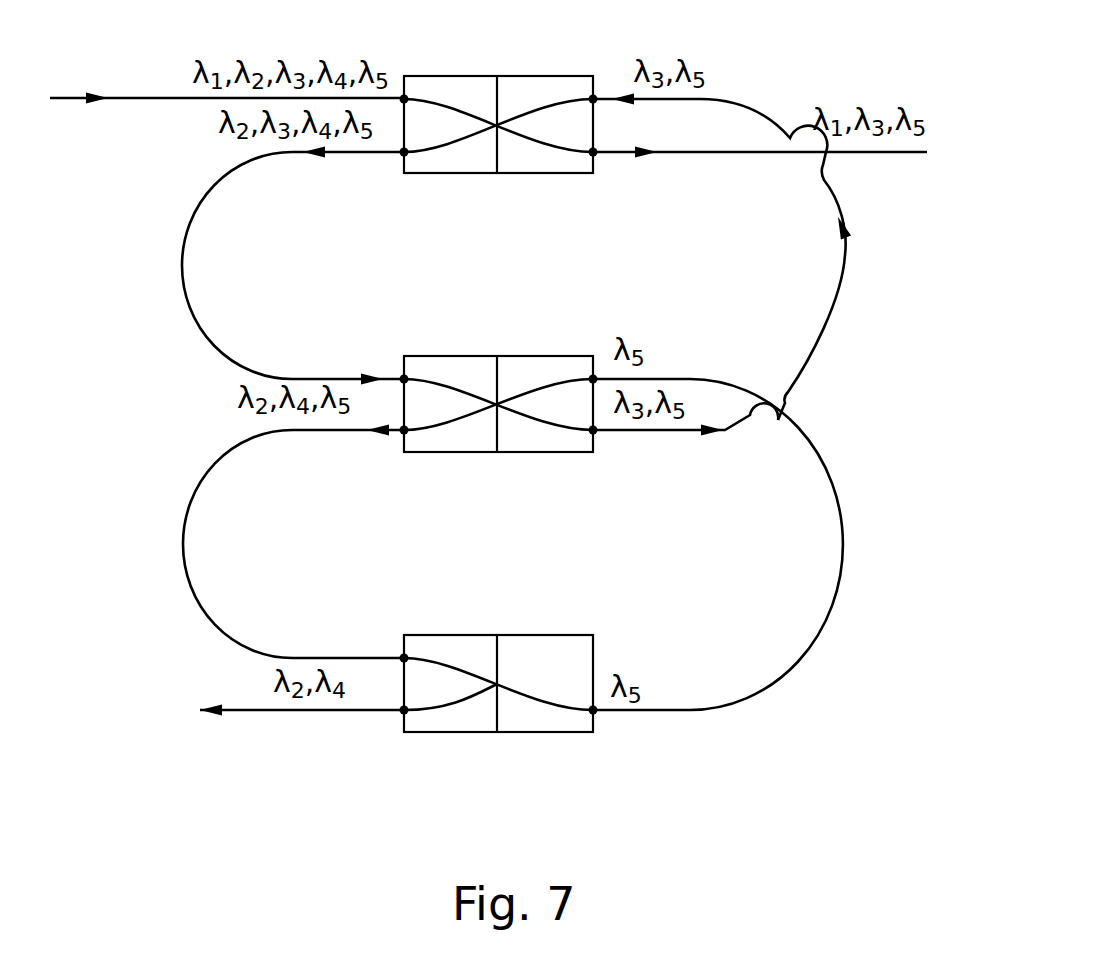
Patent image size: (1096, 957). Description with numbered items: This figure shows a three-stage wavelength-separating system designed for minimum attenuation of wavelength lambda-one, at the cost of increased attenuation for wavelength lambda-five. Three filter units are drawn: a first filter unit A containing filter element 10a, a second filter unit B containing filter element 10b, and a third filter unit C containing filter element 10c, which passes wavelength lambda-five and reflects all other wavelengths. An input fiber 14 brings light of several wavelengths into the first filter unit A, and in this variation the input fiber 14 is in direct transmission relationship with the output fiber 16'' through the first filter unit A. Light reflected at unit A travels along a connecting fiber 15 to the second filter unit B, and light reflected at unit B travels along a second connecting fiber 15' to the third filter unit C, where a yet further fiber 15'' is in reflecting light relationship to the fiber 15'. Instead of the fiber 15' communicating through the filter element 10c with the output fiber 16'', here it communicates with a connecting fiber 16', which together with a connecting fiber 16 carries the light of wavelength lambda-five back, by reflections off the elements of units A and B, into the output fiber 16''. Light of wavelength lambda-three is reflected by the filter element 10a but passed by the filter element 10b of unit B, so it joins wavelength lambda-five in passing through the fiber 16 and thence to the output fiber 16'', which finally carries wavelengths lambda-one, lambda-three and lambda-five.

The input fiber 14 is at (155, 98).
The filter element 10a is at (497, 76).
The filter element 10b is at (497, 356).
The filter element 10c is at (497, 635).
The first filter unit A is at (529, 53).
The second filter unit B is at (526, 333).
The third filter unit C is at (526, 610).
The connecting fiber 15 is at (293, 266).
The connecting fiber 15' is at (293, 542).
The further fiber 15'' is at (302, 741).
The connecting fiber 16 is at (722, 265).
The connecting fiber 16' is at (718, 544).
The output fiber 16'' is at (760, 188).